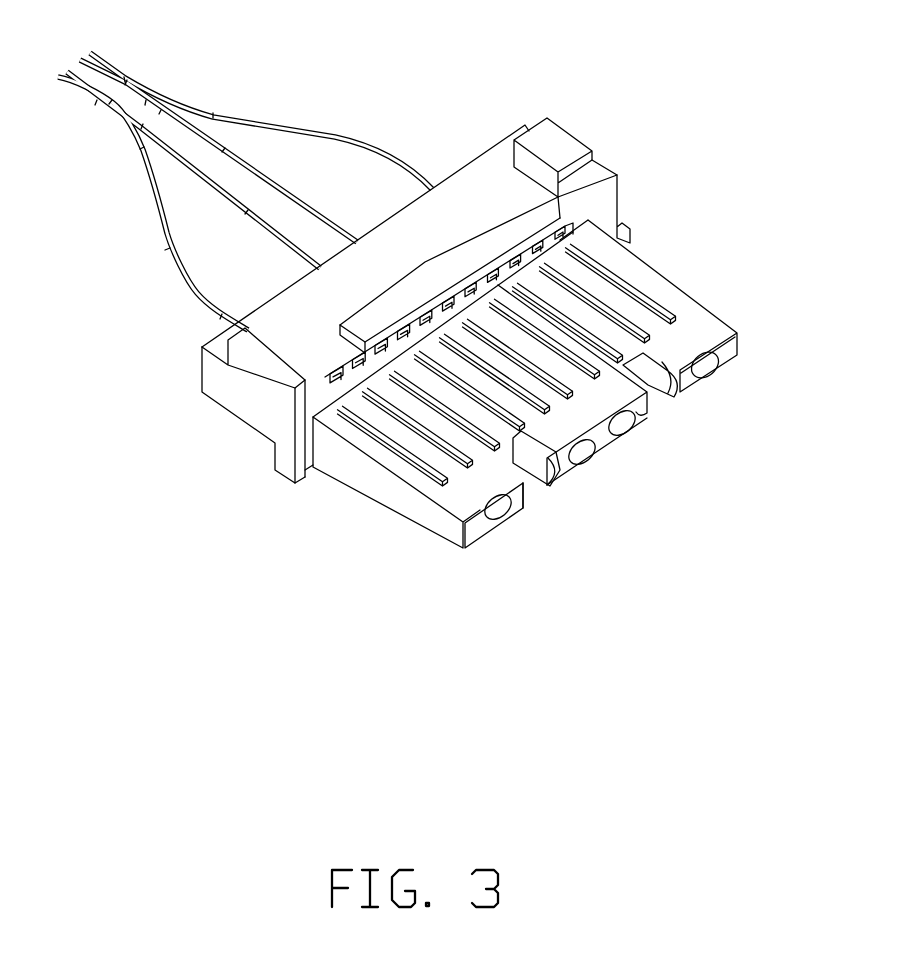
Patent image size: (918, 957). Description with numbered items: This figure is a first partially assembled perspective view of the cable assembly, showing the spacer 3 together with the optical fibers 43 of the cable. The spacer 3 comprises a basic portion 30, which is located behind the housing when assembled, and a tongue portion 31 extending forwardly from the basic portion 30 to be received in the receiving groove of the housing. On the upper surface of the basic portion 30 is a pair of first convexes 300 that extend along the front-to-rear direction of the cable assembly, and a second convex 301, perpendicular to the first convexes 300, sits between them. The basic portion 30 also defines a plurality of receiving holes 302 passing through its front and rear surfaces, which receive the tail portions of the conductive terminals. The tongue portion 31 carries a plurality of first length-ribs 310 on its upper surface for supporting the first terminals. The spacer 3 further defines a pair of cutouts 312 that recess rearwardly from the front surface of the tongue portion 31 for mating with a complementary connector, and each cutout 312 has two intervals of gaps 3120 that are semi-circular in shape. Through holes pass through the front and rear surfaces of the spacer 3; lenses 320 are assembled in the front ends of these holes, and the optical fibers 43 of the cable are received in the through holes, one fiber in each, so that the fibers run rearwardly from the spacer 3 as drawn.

The spacer 3 is at (253, 389).
The basic portion 30 is at (485, 178).
The first convexes 300 is at (558, 142).
The second convex 301 is at (515, 216).
The receiving holes 302 is at (402, 347).
The tongue portion 31 is at (627, 407).
The first length-ribs 310 is at (613, 280).
The cutouts 312 is at (533, 487).
The gaps 3120 is at (660, 385).
The lenses 320 is at (703, 367).
The optical fibers 43 is at (233, 115).